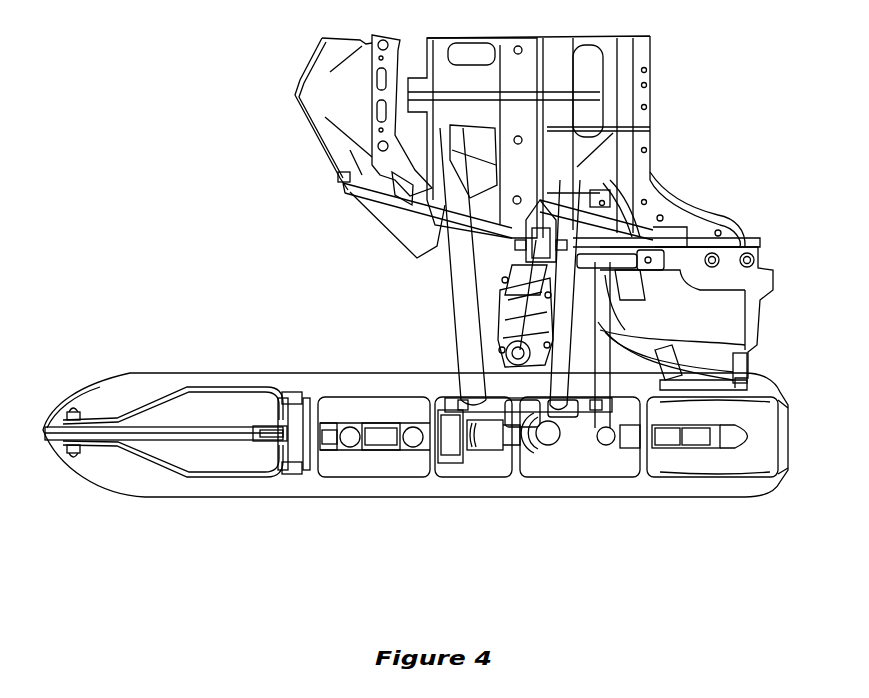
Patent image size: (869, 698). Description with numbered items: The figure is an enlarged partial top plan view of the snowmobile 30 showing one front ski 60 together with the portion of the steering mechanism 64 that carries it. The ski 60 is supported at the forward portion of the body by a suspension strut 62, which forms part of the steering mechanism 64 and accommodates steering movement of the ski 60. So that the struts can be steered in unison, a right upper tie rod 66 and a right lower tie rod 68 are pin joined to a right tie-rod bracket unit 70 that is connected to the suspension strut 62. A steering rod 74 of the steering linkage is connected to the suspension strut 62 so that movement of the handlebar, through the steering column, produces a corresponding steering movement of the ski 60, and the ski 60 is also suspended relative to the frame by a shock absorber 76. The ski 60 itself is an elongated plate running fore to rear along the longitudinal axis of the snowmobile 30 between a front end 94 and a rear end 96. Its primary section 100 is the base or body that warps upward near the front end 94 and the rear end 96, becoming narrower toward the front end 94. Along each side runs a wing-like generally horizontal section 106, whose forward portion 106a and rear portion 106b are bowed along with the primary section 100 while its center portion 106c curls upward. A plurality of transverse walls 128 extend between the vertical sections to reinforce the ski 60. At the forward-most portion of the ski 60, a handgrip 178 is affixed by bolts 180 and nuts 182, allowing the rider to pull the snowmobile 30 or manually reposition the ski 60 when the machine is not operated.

The snowmobile 30 is at (240, 76).
The front ski 60 is at (232, 306).
The suspension strut 62 is at (498, 437).
The steering mechanism 64 is at (442, 278).
The right upper tie rod 66 is at (467, 235).
The right lower tie rod 68 is at (470, 352).
The right tie-rod bracket unit 70 is at (540, 440).
The steering rod 74 is at (603, 408).
The shock absorber 76 is at (500, 298).
The front end 94 is at (42, 433).
The rear end 96 is at (790, 437).
The primary section 100 is at (217, 457).
The generally horizontal section 106 is at (272, 380).
The forward portion 106a is at (95, 395).
The rear portion 106b is at (757, 380).
The center portion 106c is at (373, 378).
The transverse wall 128 is at (327, 397).
The handgrip 178 is at (118, 430).
The bolt 180 is at (77, 450).
The nut 182 is at (70, 403).